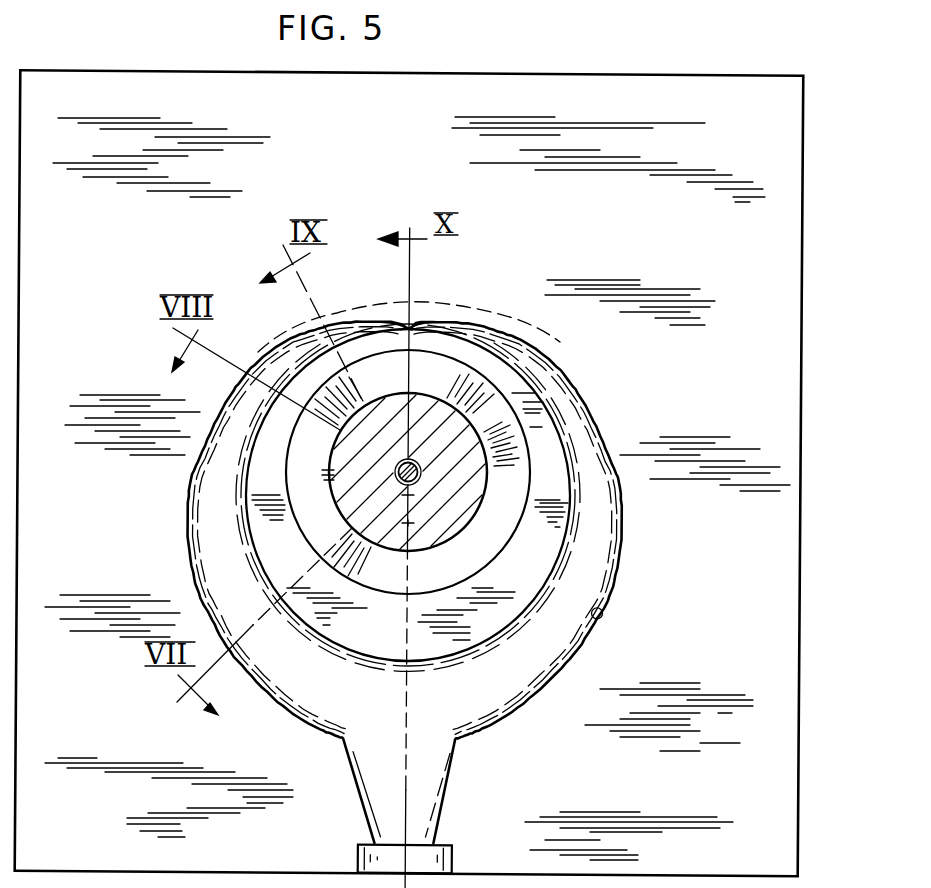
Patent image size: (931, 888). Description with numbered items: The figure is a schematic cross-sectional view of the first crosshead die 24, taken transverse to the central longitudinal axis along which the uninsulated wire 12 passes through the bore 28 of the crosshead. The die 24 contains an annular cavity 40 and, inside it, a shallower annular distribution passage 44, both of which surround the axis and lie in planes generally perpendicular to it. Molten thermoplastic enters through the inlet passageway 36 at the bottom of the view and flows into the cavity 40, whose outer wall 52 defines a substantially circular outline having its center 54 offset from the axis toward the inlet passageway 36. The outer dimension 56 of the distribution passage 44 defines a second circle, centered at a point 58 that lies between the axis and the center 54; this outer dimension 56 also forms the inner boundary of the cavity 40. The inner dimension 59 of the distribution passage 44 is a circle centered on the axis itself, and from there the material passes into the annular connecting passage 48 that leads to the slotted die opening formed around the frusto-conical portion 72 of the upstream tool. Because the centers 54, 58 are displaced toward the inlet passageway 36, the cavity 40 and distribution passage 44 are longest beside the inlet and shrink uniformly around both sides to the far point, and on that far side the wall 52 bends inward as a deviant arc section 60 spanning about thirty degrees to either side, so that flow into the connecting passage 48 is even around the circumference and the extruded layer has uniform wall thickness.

The crosshead die 24 is at (582, 70).
The annular cavity 40 is at (592, 563).
The outer wall 52 is at (603, 617).
The inlet passageway 36 is at (418, 798).
The outer dimension of distribution passage 56 is at (568, 485).
The inner dimension of distribution passage 59 is at (577, 540).
The distribution passage 44 is at (543, 430).
The connecting passage 48 is at (520, 467).
The bore 28 is at (421, 483).
The uninsulated wire 12 is at (421, 480).
The center of distribution passage outer circle 58 is at (408, 494).
The center of cavity outer circle 54 is at (405, 511).
The frusto-conical portion 72 is at (411, 530).
The deviant arc section 60 is at (446, 322).